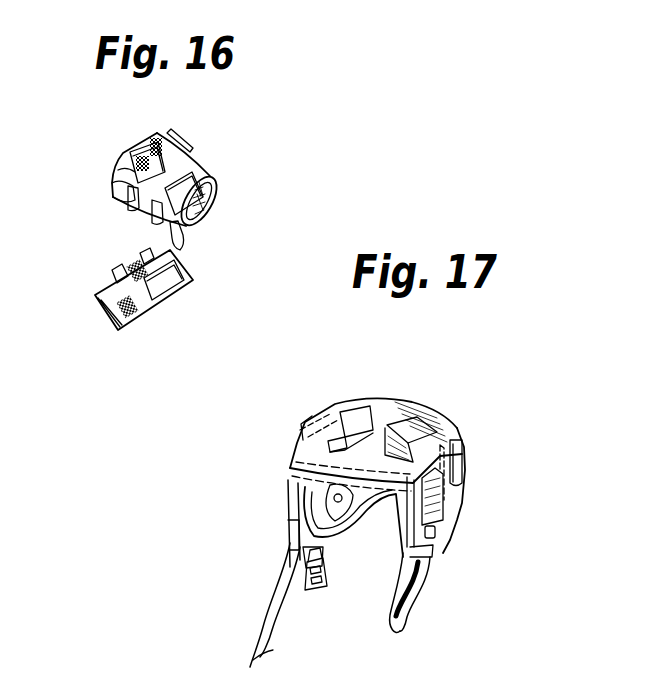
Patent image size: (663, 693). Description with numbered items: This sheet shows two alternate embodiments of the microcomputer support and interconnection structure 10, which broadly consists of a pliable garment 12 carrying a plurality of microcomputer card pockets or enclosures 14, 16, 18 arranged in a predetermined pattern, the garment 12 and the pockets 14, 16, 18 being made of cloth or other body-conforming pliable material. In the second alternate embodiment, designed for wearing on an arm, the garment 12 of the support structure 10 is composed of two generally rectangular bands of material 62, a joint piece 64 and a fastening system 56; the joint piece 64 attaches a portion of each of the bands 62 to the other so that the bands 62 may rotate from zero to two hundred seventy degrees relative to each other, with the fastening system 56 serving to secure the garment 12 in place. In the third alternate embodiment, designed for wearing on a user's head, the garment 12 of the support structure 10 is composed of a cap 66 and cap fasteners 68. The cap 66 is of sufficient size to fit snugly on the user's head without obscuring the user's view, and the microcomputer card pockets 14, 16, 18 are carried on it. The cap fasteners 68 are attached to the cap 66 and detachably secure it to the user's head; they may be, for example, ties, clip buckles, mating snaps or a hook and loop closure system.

In FIG. 16, the microcomputer support and interconnection structure 10 is at (223, 151).
In FIG. 17, the microcomputer support and interconnection structure 10 is at (477, 373).
In FIG. 16, the pliable garment 12 is at (217, 169).
In FIG. 17, the pliable garment 12 is at (450, 412).
In FIG. 17, the microcomputer card pocket 14 is at (443, 495).
In FIG. 17, the microcomputer card pocket 16 is at (458, 463).
In FIG. 17, the microcomputer card pocket 18 is at (418, 430).
In FIG. 16, the fastening system 56 is at (113, 280).
In FIG. 16, the rectangular band of material 62 is at (190, 267).
In FIG. 16, the joint piece 64 is at (173, 233).
In FIG. 17, the cap 66 is at (452, 523).
In FIG. 17, the cap fastener 68 is at (268, 622).